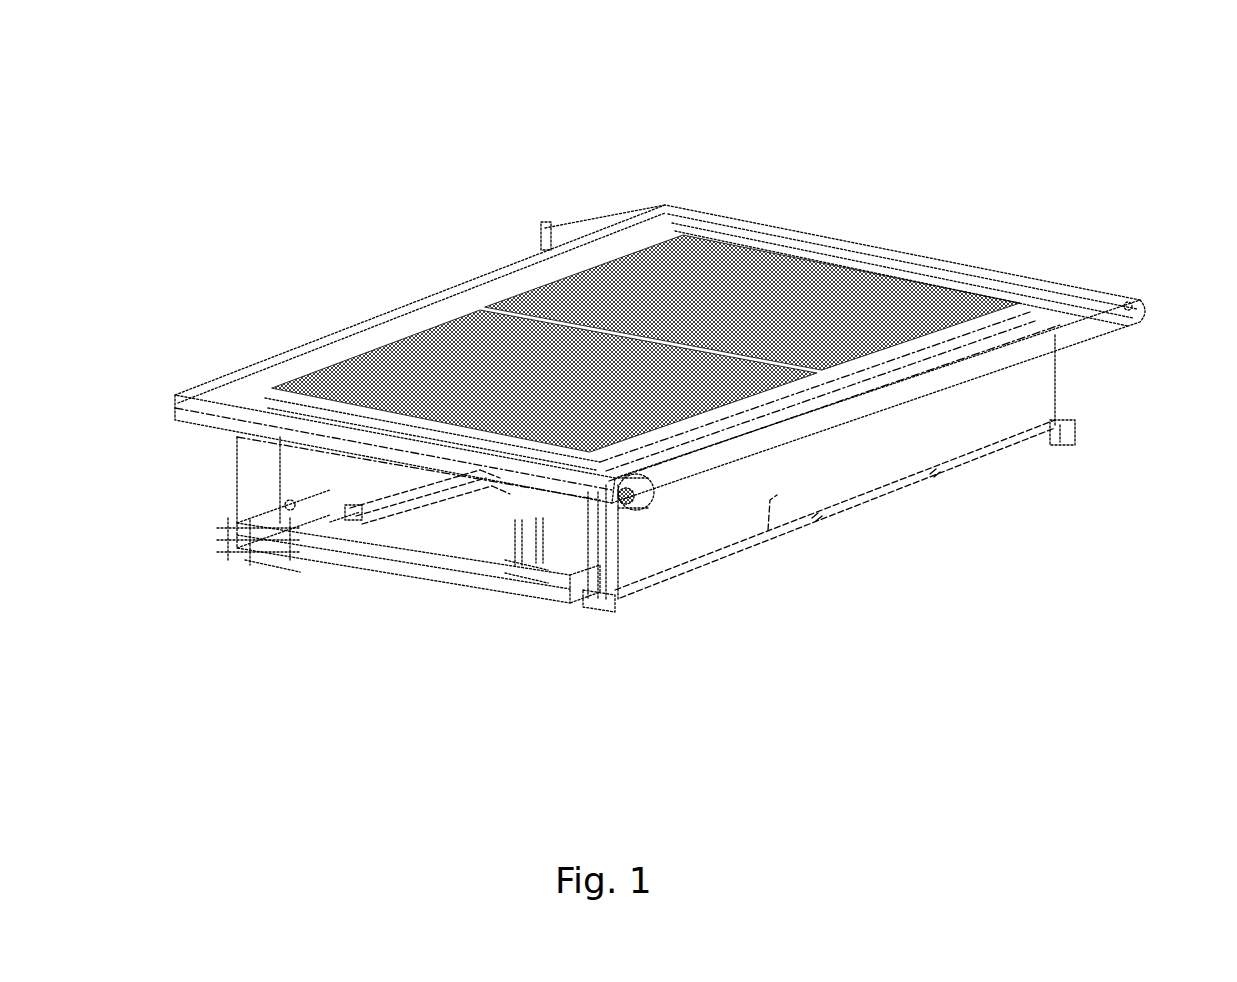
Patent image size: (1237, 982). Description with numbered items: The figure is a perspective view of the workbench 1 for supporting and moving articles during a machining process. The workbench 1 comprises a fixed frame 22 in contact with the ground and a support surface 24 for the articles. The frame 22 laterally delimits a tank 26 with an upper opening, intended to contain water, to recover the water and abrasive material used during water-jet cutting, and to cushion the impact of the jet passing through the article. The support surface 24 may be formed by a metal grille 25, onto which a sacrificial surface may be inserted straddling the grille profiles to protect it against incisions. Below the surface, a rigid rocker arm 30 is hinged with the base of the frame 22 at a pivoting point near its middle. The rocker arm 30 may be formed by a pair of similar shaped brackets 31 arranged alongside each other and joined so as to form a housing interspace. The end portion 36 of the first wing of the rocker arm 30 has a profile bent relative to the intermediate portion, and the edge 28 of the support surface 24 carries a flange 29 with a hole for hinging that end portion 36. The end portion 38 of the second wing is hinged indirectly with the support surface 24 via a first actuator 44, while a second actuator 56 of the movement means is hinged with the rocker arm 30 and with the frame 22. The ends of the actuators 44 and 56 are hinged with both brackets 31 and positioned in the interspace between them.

The workbench 1 is at (1157, 165).
The frame 22 is at (836, 487).
The support surface 24 is at (1015, 347).
The metal grille 25 is at (408, 350).
The tank 26 is at (768, 530).
The edge 28 is at (627, 478).
The flange 29 is at (630, 476).
The rocker arm 30 is at (445, 540).
The brackets 31 is at (368, 521).
The end portion 36 is at (592, 511).
The end portion 38 is at (358, 513).
The first actuator 44 is at (417, 498).
The second actuator 56 is at (520, 563).